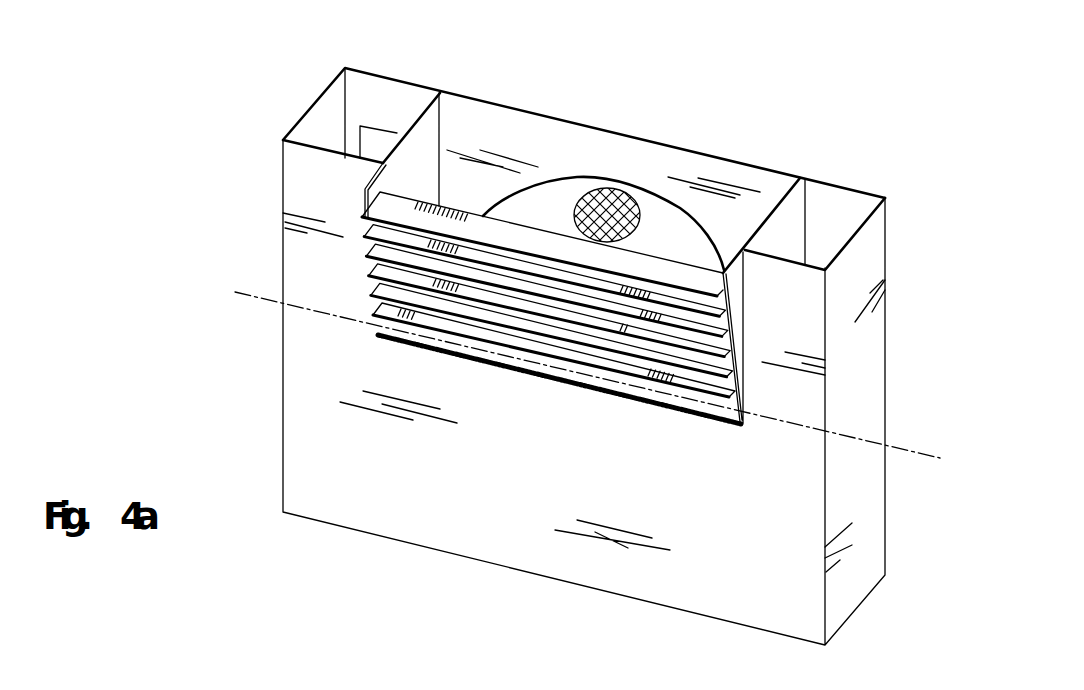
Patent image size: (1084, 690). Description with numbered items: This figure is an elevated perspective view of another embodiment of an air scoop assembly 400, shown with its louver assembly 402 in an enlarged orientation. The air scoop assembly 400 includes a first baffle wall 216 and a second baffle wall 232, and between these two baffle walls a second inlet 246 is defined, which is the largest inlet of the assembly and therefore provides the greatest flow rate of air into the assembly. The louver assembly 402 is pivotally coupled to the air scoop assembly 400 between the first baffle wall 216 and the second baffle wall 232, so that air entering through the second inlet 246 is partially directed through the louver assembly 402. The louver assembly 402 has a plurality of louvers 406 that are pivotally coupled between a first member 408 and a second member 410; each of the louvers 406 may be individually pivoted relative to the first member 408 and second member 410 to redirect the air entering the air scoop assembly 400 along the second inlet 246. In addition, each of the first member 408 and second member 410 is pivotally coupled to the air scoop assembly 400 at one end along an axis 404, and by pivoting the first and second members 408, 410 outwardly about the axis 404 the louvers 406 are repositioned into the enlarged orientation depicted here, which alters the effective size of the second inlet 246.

The air scoop assembly 400 is at (812, 110).
The first baffle wall 216 is at (427, 137).
The second baffle wall 232 is at (793, 218).
The second inlet 246 is at (645, 173).
The first member 408 is at (366, 179).
The second member 410 is at (735, 297).
The louver assembly 402 is at (358, 291).
The louvers 406 is at (448, 320).
The axis 404 is at (917, 457).